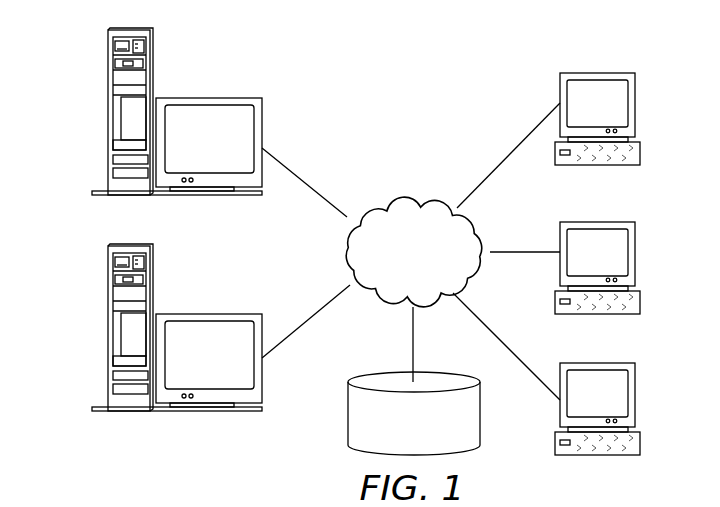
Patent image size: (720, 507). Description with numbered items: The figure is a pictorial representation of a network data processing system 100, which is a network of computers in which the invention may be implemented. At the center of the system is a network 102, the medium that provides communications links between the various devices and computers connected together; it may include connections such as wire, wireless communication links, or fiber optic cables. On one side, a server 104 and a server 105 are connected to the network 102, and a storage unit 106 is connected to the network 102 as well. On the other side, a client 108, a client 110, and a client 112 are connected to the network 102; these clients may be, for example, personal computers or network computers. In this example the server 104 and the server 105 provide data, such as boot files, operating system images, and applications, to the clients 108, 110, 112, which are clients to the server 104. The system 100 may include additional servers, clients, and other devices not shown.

The network data processing system 100 is at (466, 80).
The network 102 is at (385, 200).
The server 104 is at (108, 115).
The server 105 is at (108, 330).
The storage unit 106 is at (348, 412).
The client 108 is at (635, 103).
The client 110 is at (635, 252).
The client 112 is at (635, 397).